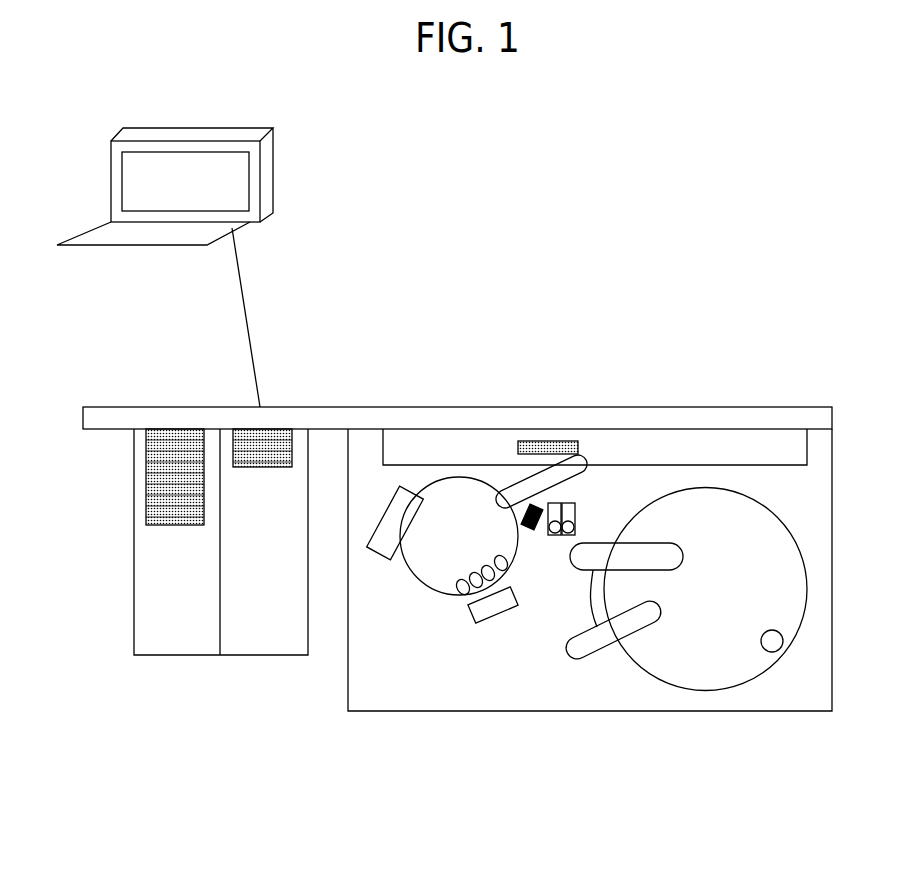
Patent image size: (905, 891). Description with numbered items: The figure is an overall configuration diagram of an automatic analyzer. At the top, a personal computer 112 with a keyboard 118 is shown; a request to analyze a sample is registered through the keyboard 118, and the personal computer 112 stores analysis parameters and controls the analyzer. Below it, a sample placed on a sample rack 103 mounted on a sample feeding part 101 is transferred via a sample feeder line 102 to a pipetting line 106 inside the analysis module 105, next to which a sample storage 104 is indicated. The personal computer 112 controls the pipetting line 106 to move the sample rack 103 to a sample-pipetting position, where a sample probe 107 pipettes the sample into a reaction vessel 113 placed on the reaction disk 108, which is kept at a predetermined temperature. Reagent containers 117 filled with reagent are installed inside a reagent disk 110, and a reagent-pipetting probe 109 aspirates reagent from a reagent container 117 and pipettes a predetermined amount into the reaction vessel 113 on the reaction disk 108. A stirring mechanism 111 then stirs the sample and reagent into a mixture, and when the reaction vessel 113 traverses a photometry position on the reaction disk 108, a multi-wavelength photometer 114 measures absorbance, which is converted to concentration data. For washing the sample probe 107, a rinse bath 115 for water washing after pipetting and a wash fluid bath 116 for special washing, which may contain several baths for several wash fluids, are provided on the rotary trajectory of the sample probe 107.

The sample feeding part 101 is at (140, 469).
The sample feeder line 102 is at (240, 420).
The sample rack 103 is at (272, 433).
The sample storage 104 is at (242, 642).
The analysis module 105 is at (480, 687).
The pipetting line 106 is at (405, 440).
The sample probe 107 is at (518, 485).
The reaction disk 108 is at (508, 542).
The reagent-pipetting probe 109 is at (635, 600).
The reagent disk 110 is at (717, 517).
The stirring mechanism 111 is at (382, 557).
The personal computer 112 is at (273, 167).
The reaction vessel 113 is at (463, 595).
The multi-wavelength photometer 114 is at (483, 625).
The rinse bath 115 is at (537, 530).
The wash fluid bath 116 is at (558, 535).
The reagent container 117 is at (768, 655).
The keyboard 118 is at (250, 228).